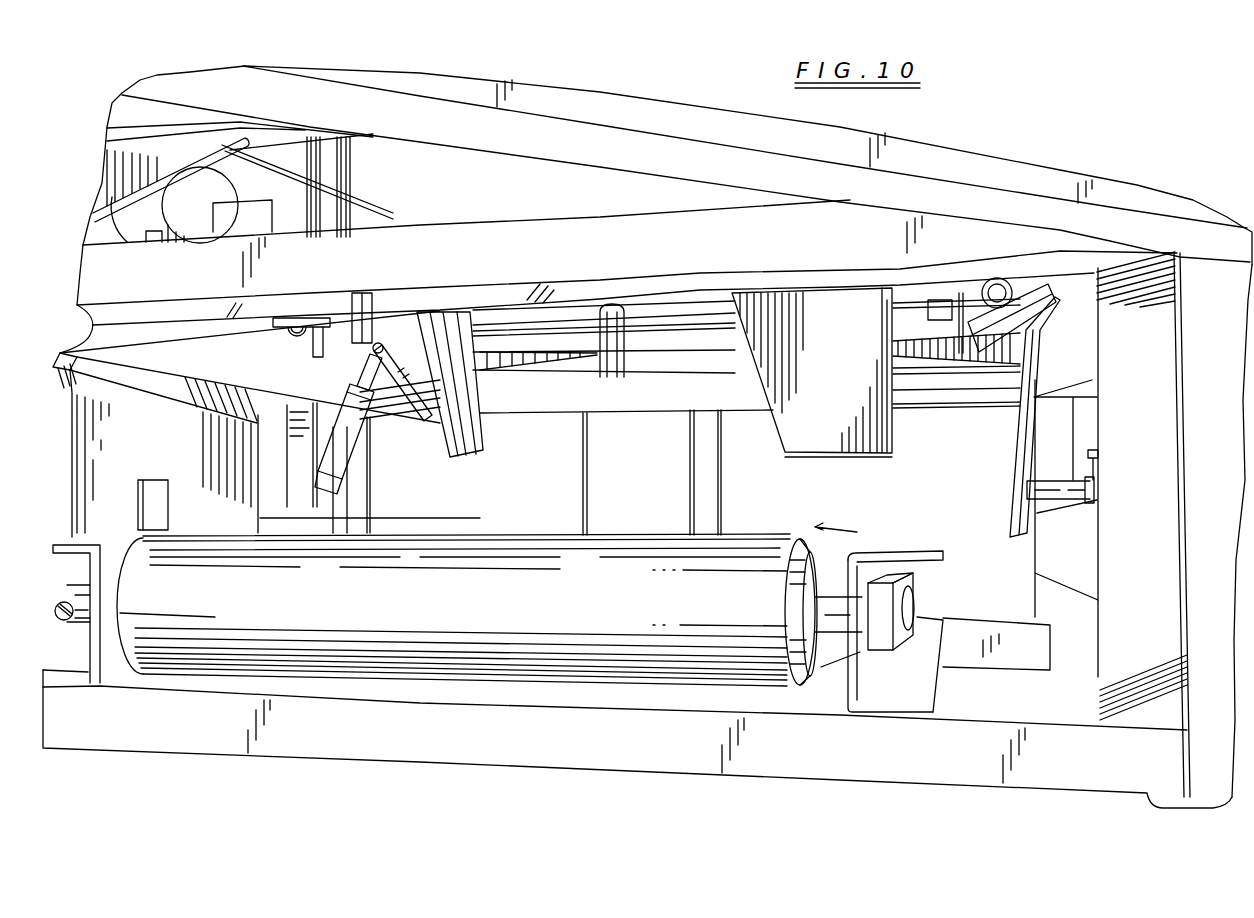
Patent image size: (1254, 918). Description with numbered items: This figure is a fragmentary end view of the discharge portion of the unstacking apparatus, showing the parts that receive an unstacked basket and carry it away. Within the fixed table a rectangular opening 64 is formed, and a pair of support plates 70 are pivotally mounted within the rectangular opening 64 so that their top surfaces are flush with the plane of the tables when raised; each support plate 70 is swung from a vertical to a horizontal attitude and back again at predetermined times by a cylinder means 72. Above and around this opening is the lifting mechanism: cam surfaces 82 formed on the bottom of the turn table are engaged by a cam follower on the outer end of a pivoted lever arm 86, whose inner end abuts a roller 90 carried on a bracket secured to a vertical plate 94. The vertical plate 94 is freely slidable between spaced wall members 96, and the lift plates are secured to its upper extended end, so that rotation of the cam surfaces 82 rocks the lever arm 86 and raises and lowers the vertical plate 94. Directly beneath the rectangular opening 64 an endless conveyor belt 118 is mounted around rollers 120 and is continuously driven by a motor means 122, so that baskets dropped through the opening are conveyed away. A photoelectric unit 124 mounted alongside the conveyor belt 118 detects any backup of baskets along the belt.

The rectangular opening 64 is at (392, 222).
The support plate 70 is at (483, 443).
The cylinder means 72 is at (353, 443).
The cam surface 82 is at (183, 187).
The lever arm 86 is at (243, 330).
The roller 90 is at (302, 316).
The vertical plate 94 is at (340, 313).
The wall members 96 is at (385, 313).
The endless conveyor belt 118 is at (517, 535).
The roller 120 is at (808, 680).
The motor means 122 is at (933, 594).
The photoelectric unit 124 is at (155, 493).